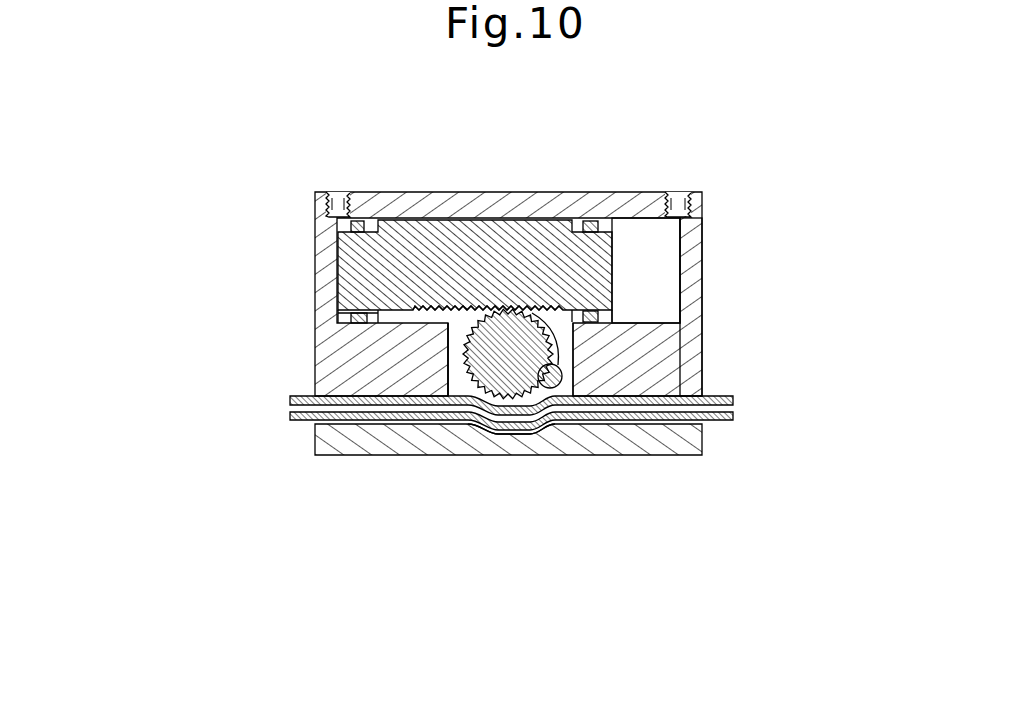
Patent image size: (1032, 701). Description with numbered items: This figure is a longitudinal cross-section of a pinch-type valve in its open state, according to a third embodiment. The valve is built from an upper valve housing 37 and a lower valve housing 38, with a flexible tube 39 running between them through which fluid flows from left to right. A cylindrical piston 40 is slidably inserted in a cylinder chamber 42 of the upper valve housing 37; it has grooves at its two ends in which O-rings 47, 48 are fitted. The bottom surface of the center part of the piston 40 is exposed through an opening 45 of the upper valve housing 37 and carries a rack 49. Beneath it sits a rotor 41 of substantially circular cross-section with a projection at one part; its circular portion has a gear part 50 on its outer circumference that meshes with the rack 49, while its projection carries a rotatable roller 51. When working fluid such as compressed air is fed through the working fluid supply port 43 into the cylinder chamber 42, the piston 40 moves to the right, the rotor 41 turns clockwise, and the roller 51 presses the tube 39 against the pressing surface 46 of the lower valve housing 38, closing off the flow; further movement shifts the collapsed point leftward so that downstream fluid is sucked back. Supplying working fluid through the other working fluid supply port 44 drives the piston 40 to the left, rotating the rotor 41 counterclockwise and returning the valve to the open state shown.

The upper valve housing 37 is at (692, 262).
The lower valve housing 38 is at (339, 446).
The tube 39 is at (722, 394).
The piston 40 is at (443, 253).
The rotor 41 is at (510, 372).
The cylinder chamber 42 is at (672, 262).
The working fluid supply port 43 is at (335, 193).
The working fluid supply port 44 is at (682, 193).
The opening 45 is at (462, 332).
The pressing surface 46 is at (541, 397).
The O-ring 47 is at (358, 193).
The O-ring 48 is at (588, 222).
The rack 49 is at (440, 300).
The gear part 50 is at (466, 360).
The roller 51 is at (565, 392).